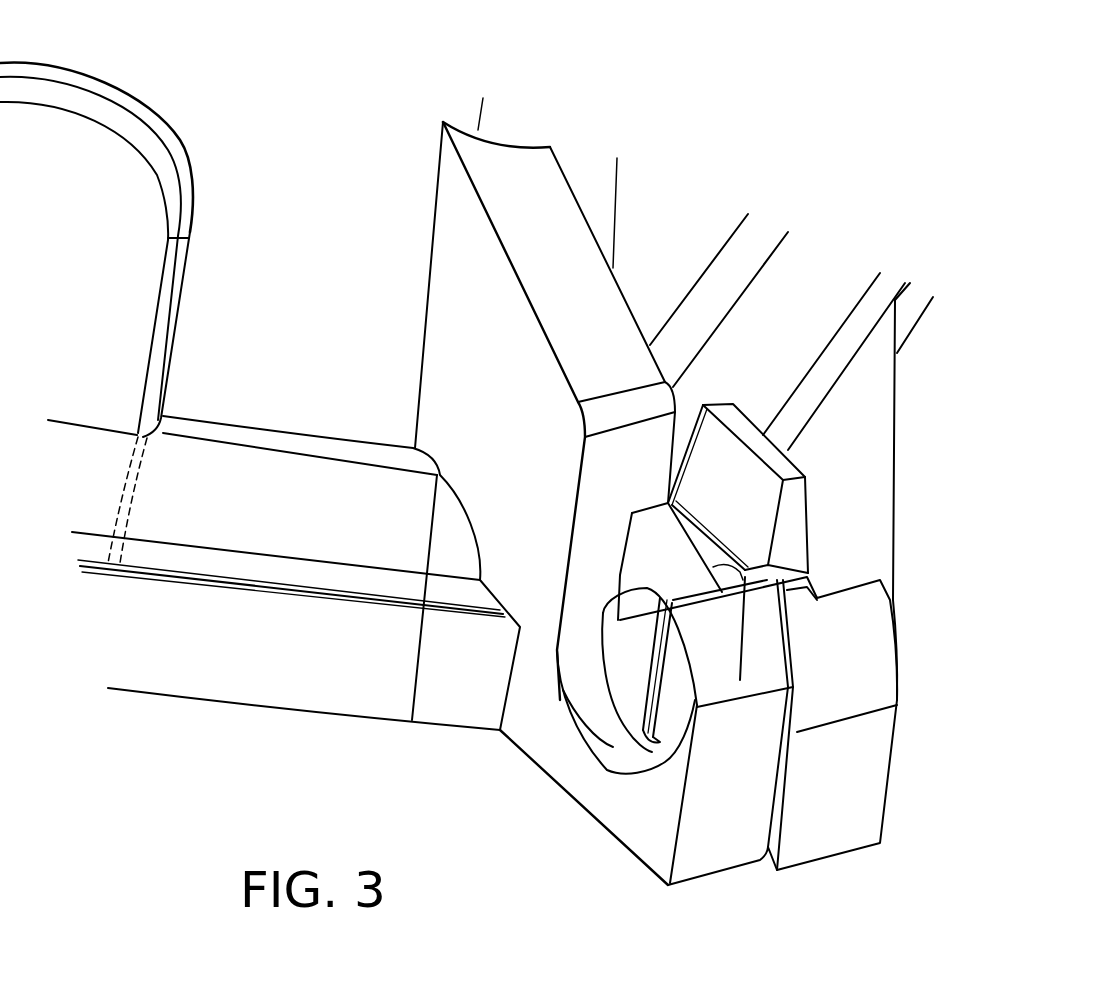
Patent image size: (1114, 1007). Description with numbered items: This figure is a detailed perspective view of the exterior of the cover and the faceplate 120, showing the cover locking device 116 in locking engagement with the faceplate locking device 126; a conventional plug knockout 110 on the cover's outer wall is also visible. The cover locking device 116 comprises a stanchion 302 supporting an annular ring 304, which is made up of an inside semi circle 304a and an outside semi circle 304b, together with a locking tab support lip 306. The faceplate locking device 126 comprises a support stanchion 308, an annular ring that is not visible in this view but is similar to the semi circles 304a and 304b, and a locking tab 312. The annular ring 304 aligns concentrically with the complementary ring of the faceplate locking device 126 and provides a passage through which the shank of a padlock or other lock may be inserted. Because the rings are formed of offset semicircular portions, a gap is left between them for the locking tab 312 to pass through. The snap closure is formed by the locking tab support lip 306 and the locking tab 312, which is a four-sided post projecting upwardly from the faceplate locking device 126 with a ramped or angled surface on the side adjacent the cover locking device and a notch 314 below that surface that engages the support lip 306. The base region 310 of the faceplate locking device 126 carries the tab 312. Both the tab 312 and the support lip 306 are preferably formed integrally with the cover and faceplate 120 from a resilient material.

The plug knockout 110 is at (173, 150).
The faceplate 120 is at (162, 695).
The cover locking device 116 is at (490, 752).
The stanchion 302 is at (600, 302).
The annular ring 304 is at (597, 748).
The inside semi circle 304a is at (633, 602).
The outside semi circle 304b is at (585, 760).
The locking tab support lip 306 is at (740, 680).
The support stanchion 308 is at (847, 540).
The bracket block 310 is at (905, 678).
The locking tab 312 is at (797, 512).
The notch 314 is at (783, 590).
The faceplate locking device 126 is at (917, 640).